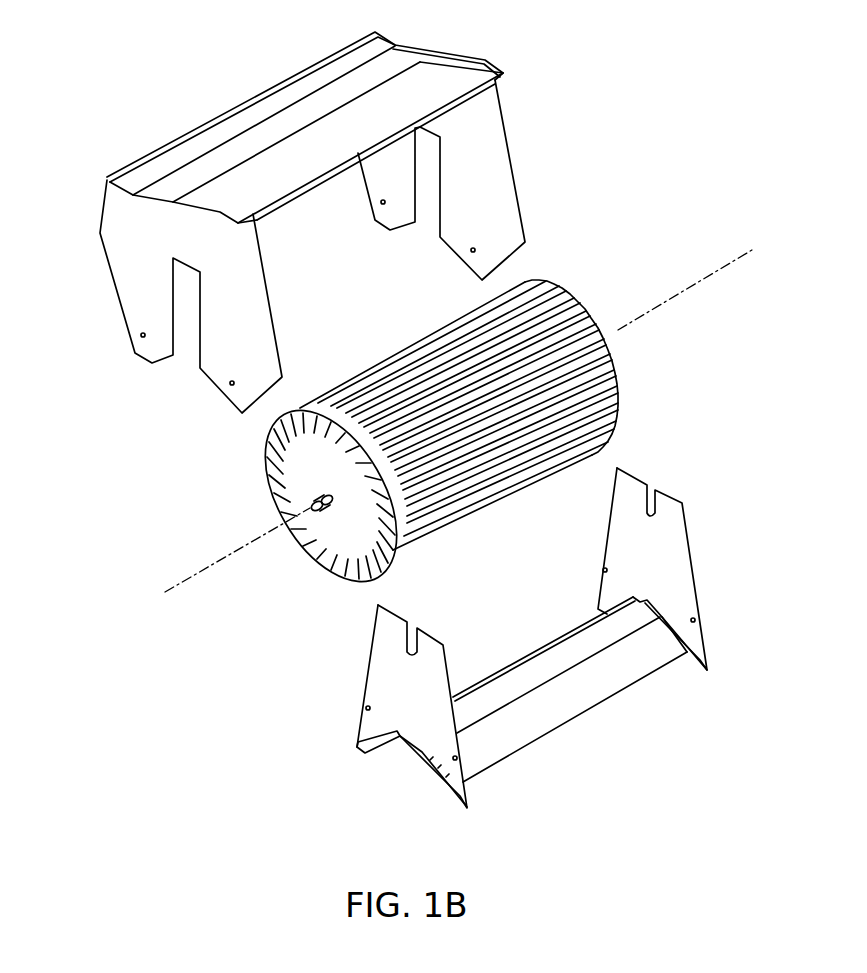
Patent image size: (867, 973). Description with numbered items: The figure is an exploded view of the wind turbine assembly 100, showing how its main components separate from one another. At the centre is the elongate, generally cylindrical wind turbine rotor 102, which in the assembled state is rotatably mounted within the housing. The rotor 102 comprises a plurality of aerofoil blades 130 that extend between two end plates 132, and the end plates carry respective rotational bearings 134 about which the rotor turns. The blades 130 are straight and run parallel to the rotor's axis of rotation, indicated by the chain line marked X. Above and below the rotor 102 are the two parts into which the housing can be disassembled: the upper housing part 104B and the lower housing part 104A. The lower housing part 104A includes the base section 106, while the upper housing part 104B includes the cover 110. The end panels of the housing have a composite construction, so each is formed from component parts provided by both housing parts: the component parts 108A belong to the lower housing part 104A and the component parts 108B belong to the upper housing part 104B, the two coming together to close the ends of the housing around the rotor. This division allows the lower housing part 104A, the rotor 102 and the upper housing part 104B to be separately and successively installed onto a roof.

The wind turbine assembly 100 is at (88, 62).
The wind turbine rotor 102 is at (636, 257).
The lower housing part 104A is at (650, 760).
The upper housing part 104B is at (212, 71).
The base section 106 is at (537, 720).
The end panel component part 108A is at (388, 710).
The end panel component part 108B is at (490, 162).
The cover 110 is at (297, 155).
The aerofoil blades 130 is at (603, 402).
The end plates 132 is at (305, 463).
The rotational bearings 134 is at (313, 500).